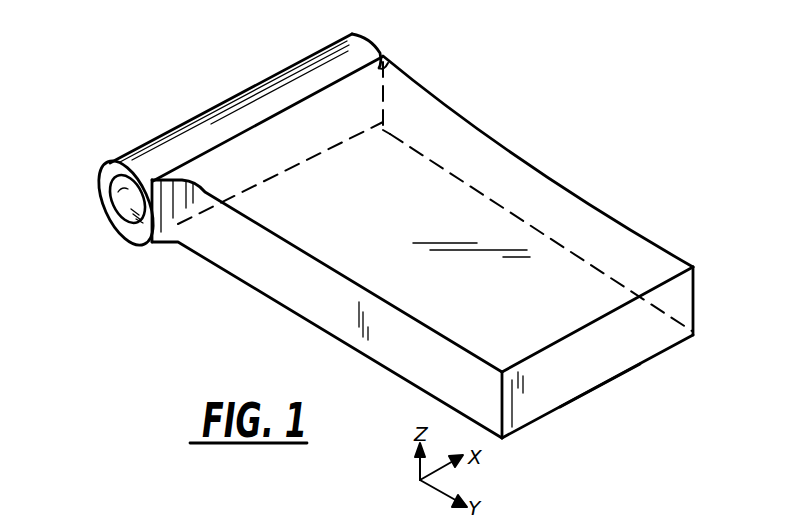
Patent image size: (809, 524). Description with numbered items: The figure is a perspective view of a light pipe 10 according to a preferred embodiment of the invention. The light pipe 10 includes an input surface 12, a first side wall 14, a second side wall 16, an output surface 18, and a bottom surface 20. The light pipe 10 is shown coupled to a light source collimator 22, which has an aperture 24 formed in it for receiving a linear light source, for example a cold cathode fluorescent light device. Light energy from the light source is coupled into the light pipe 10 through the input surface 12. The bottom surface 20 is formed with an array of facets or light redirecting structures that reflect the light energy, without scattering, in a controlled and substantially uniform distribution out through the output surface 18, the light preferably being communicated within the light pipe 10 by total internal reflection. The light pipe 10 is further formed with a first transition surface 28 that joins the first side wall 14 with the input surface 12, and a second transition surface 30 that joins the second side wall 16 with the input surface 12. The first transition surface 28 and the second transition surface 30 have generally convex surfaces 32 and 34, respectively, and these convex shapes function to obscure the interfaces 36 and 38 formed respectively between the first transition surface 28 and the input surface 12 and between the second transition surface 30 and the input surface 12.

The light pipe 10 is at (678, 171).
The input surface 12 is at (388, 86).
The first side wall 14 is at (372, 334).
The second side wall 16 is at (696, 305).
The output surface 18 is at (512, 250).
The bottom surface 20 is at (598, 391).
The light source collimator 22 is at (259, 93).
The aperture 24 is at (118, 200).
The first transition surface 28 is at (180, 220).
The second transition surface 30 is at (383, 64).
The convex surface 32 is at (145, 229).
The convex surface 34 is at (389, 130).
The interface 36 is at (150, 244).
The interface 38 is at (385, 53).